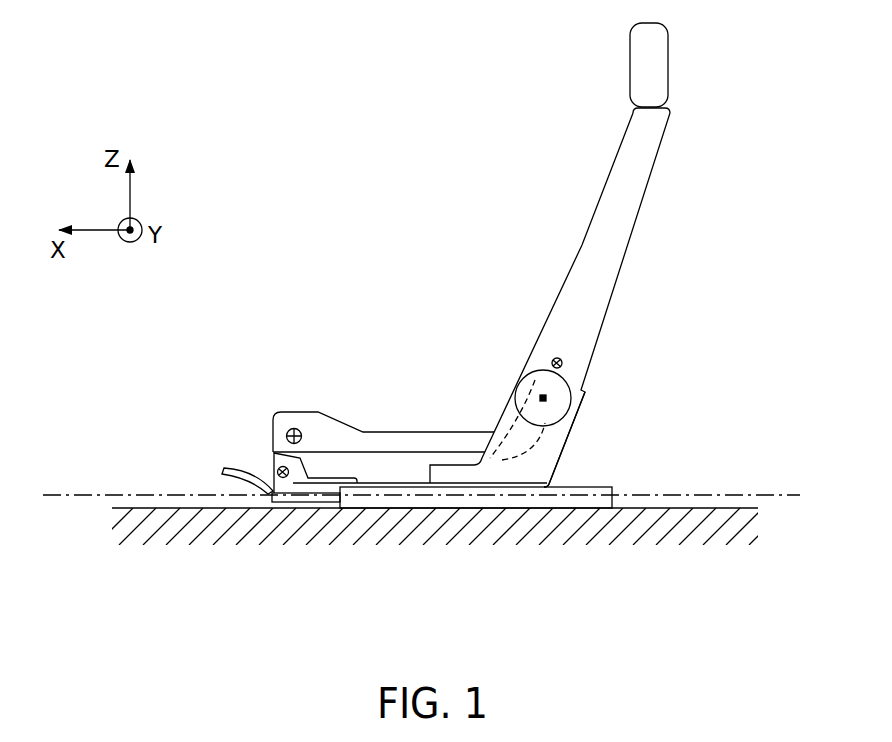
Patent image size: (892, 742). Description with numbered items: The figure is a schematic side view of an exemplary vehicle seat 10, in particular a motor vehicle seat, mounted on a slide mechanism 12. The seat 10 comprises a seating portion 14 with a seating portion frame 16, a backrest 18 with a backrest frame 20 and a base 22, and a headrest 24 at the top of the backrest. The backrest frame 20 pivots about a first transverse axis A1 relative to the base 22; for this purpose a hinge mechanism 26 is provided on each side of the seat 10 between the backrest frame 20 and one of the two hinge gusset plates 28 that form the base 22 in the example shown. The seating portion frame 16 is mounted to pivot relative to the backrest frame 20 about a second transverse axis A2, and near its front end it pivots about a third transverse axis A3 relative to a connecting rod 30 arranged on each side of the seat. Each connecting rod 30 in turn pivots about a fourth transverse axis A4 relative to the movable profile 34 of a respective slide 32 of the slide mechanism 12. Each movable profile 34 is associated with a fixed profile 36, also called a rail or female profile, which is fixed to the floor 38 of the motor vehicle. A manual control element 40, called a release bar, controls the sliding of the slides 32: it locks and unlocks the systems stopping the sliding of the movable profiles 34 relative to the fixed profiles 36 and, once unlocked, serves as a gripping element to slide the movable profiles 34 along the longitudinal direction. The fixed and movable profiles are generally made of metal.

The vehicle seat 10 is at (370, 233).
The slide mechanism 12 is at (165, 440).
The seating portion 14 is at (357, 377).
The seating portion frame 16 is at (390, 440).
The backrest 18 is at (543, 216).
The backrest frame 20 is at (630, 203).
The base 22 is at (592, 433).
The headrest 24 is at (653, 67).
The hinge mechanism 26 is at (530, 388).
The hinge gusset plate 28 is at (550, 455).
The connecting rod 30 is at (278, 457).
The slide 32 is at (442, 574).
The movable profile 34 is at (333, 503).
The fixed profile 36 is at (514, 503).
The floor 38 is at (714, 507).
The manual control element 40 is at (222, 471).
The first transverse axis A1 is at (525, 406).
The second transverse axis A2 is at (555, 359).
The third transverse axis A3 is at (290, 430).
The fourth transverse axis A4 is at (281, 480).